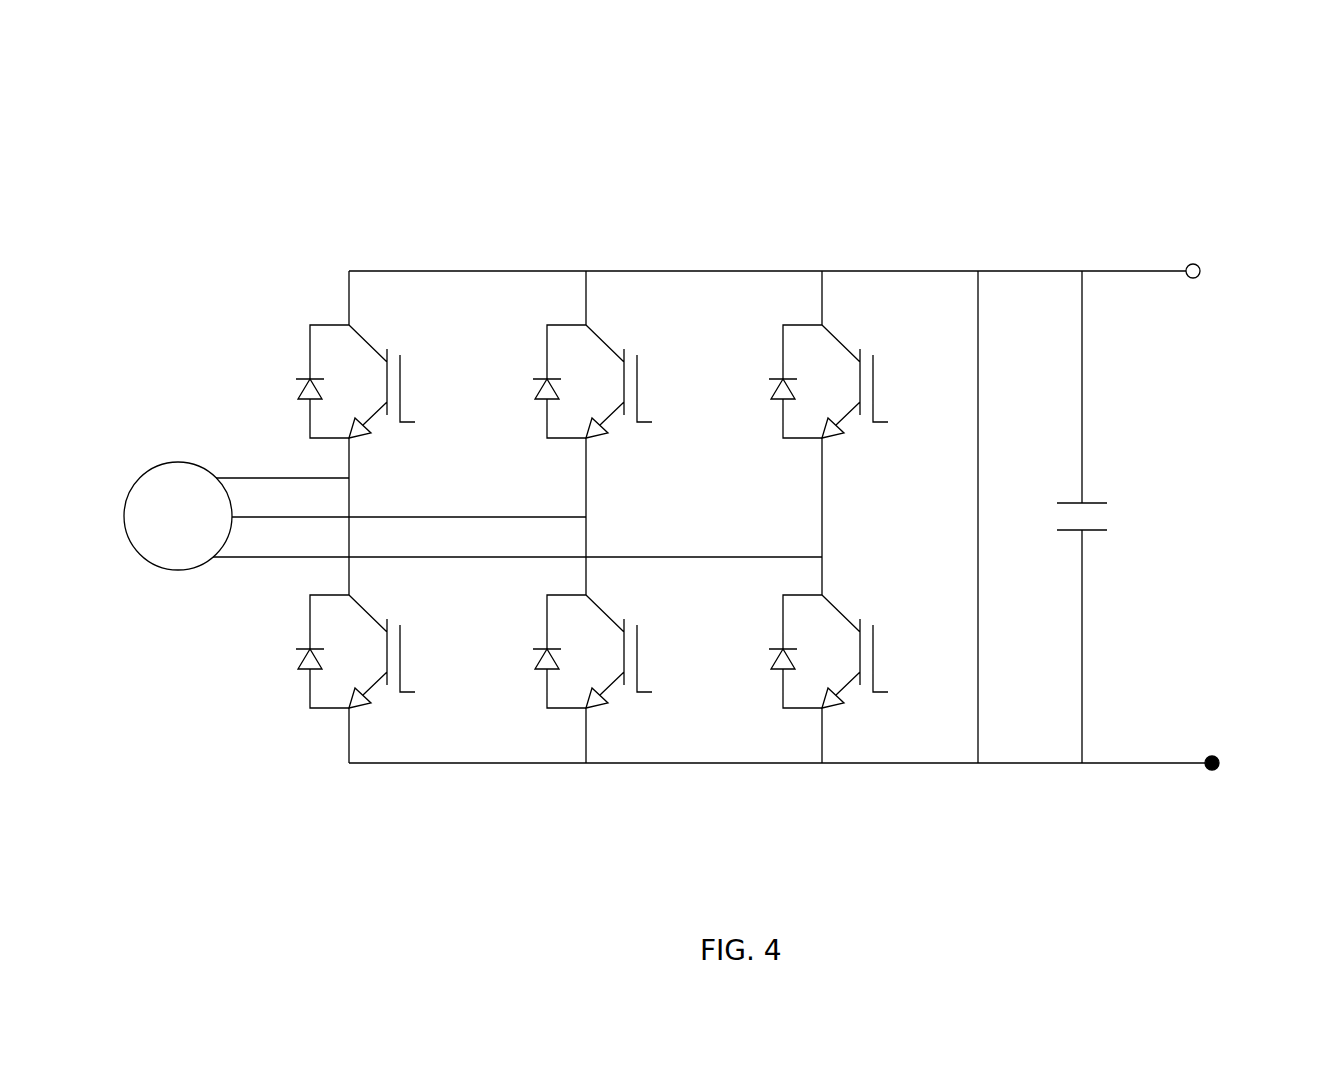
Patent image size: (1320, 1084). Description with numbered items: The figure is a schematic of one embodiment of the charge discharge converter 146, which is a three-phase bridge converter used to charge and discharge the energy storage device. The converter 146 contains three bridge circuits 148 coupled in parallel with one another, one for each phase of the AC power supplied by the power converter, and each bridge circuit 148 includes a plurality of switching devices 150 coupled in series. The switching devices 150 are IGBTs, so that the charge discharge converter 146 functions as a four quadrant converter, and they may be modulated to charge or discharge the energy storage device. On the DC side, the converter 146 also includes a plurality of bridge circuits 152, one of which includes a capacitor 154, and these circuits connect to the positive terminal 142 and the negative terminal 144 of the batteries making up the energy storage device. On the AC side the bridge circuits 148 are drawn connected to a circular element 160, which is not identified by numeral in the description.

The inverter 146 is at (242, 125).
The electric motor 160 is at (177, 462).
The switching device (IGBT with antiparallel diode) 150 is at (278, 353).
The phase output line 148 is at (349, 497).
The DC bus conductor 152 is at (978, 517).
The DC link capacitor 154 is at (1115, 466).
The positive DC terminal 142 is at (1199, 266).
The negative DC terminal 144 is at (1218, 755).